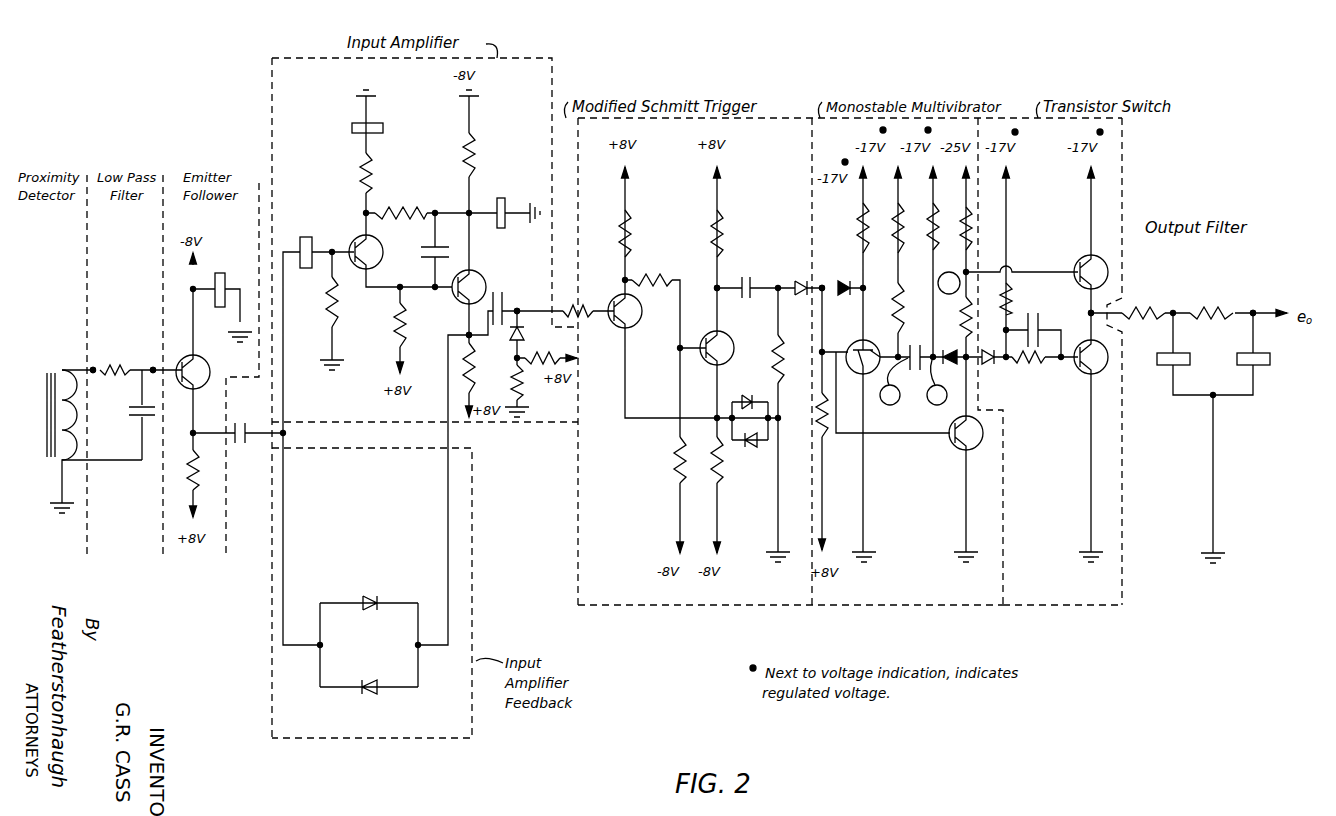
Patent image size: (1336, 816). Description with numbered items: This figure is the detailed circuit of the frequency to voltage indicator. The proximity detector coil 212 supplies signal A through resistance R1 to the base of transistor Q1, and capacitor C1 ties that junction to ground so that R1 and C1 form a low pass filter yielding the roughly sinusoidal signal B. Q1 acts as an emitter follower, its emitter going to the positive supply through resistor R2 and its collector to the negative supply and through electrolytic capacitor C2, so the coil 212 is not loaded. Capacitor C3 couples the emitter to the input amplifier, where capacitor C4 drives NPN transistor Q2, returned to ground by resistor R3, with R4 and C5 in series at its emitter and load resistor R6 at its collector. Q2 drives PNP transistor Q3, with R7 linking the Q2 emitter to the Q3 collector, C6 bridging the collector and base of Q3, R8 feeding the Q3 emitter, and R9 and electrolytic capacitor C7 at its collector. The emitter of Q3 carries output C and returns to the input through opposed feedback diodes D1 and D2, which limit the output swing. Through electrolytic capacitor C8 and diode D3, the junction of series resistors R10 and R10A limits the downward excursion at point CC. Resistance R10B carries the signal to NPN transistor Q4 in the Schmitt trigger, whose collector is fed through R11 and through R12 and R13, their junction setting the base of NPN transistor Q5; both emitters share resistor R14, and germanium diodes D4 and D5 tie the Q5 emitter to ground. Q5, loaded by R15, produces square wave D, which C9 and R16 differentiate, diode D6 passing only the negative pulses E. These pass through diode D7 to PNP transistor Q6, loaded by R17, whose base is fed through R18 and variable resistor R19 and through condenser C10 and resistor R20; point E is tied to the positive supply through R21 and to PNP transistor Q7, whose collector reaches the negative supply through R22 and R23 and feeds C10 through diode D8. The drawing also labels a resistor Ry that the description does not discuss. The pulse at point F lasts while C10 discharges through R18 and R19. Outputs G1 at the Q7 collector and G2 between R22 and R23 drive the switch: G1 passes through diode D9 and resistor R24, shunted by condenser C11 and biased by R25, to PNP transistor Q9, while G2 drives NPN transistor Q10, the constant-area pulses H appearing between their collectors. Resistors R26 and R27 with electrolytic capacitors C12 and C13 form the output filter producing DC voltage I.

The coil 212 is at (72, 440).
The resistance R1 is at (128, 365).
The capacitor C1 is at (134, 421).
The transistor Q1 is at (190, 355).
The electrolytic capacitor C2 is at (212, 270).
The resistor R2 is at (188, 452).
The capacitor C3 is at (250, 446).
The signal A is at (93, 368).
The signal B is at (153, 368).
The output C is at (469, 335).
The point CC is at (517, 311).
The square wave D is at (717, 288).
The negative pulses E is at (822, 286).
The point F is at (894, 381).
The point G1 is at (937, 382).
The point G2 is at (949, 283).
The pulses H is at (1089, 313).
The voltage I is at (1255, 313).
The capacitor C4 is at (333, 232).
The resistor R3 is at (338, 300).
The NPN transistor Q2 is at (378, 240).
The capacitor C5 is at (385, 130).
The resistance R4 is at (382, 173).
The resistor R7 is at (384, 205).
The capacitor C6 is at (421, 257).
The resistor R6 is at (395, 326).
The resistor R9 is at (486, 154).
The electrolytic capacitor C7 is at (500, 184).
The PNP transistor Q3 is at (480, 272).
The electrolytic capacitor C8 is at (515, 291).
The resistance R10B is at (602, 302).
The diode D3 is at (510, 342).
The resistor R8 is at (477, 378).
The resistance R10 is at (533, 370).
The resistance R10A is at (531, 402).
The diode D1 is at (368, 590).
The diode D2 is at (375, 700).
The resistance R11 is at (634, 230).
The resistance R12 is at (642, 262).
The NPN transistor Q4 is at (632, 320).
The resistance R13 is at (672, 470).
The resistor R15 is at (727, 232).
The NPN transistor Q5 is at (726, 349).
The resistor R14 is at (722, 475).
The capacitor C9 is at (752, 298).
The diode D6 is at (800, 280).
The resistor R16 is at (786, 355).
The germanium diode D4 is at (762, 395).
The germanium diode D5 is at (762, 446).
The resistor R17 is at (845, 228).
The resistor Ry is at (834, 235).
The diode D7 is at (828, 294).
The PNP transistor Q6 is at (858, 340).
The resistor R21 is at (828, 440).
The variable resistor R19 is at (910, 228).
The resistor R18 is at (909, 304).
The condenser C10 is at (908, 386).
The resistor R20 is at (945, 226).
The diode D8 is at (962, 350).
The resistor R23 is at (975, 228).
The resistor R22 is at (975, 287).
The resistor R25 is at (1014, 292).
The condenser C11 is at (1048, 312).
The resistor R24 is at (1028, 362).
The diode D9 is at (995, 366).
The PNP transistor Q7 is at (949, 443).
The NPN transistor Q10 is at (1072, 258).
The PNP transistor Q9 is at (1085, 378).
The resistor R26 is at (1143, 305).
The resistor R27 is at (1211, 305).
The electrolytic capacitor C12 is at (1185, 352).
The electrolytic capacitor C13 is at (1233, 360).